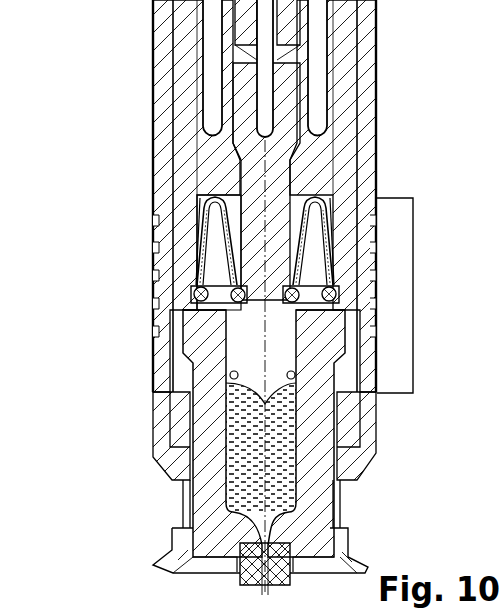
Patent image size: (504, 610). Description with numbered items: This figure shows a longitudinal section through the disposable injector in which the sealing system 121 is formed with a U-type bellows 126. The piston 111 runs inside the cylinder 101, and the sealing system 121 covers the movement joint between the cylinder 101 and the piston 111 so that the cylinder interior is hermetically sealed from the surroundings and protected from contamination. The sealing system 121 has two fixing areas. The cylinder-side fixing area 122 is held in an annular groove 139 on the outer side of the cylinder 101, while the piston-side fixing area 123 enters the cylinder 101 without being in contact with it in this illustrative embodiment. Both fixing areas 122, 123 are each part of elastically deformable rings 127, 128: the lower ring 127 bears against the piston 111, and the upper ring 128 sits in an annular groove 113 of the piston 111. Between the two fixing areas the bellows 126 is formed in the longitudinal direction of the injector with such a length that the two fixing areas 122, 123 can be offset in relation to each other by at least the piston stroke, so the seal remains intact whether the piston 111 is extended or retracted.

The cylinder 101 is at (213, 428).
The piston 111 is at (240, 100).
The annular groove 113 is at (360, 243).
The sealing system 121 is at (221, 191).
The cylinder-side fixing area 122 is at (194, 291).
The piston-side fixing area 123 is at (190, 313).
The bellows 126 is at (204, 220).
The elastically deformable ring 127 is at (337, 300).
The elastically deformable ring 128 is at (332, 287).
The annular groove 139 is at (225, 290).